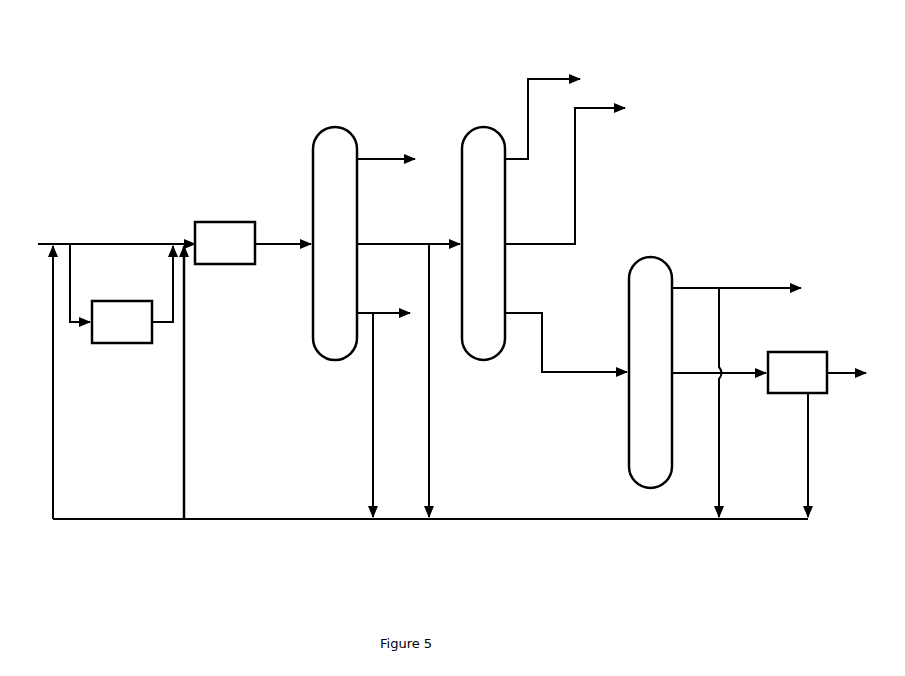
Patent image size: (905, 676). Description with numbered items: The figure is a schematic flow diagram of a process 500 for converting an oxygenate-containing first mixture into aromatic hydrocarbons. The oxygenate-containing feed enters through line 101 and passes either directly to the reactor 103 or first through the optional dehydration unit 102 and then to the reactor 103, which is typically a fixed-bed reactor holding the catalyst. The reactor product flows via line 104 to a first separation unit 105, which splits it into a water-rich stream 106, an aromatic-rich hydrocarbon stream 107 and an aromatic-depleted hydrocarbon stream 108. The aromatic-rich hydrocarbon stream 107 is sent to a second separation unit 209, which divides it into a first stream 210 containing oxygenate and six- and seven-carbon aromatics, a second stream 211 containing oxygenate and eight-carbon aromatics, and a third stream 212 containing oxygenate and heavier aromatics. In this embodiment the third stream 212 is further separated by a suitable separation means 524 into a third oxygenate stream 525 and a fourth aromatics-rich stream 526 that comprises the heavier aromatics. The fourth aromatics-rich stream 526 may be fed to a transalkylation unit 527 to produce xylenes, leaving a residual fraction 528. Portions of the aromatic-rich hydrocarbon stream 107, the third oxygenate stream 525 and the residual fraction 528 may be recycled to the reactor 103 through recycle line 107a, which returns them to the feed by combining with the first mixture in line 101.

The process 500 is at (82, 75).
The line 101 is at (107, 243).
The dehydration unit 102 is at (121, 293).
The reactor 103 is at (219, 370).
The line 104 is at (285, 243).
The first separation unit 105 is at (335, 243).
The water-rich stream 106 is at (388, 158).
The aromatic-rich hydrocarbon stream 107 is at (386, 243).
The recycle line 107a is at (597, 518).
The aromatic-depleted hydrocarbon stream 108 is at (392, 313).
The second separation unit 209 is at (483, 243).
The first stream 210 is at (543, 78).
The second stream 211 is at (520, 243).
The third stream 212 is at (523, 313).
The separation means 524 is at (650, 372).
The third oxygenate stream 525 is at (703, 287).
The fourth aromatics-rich stream 526 is at (699, 375).
The transalkylation unit 527 is at (817, 372).
The residual fraction 528 is at (807, 427).